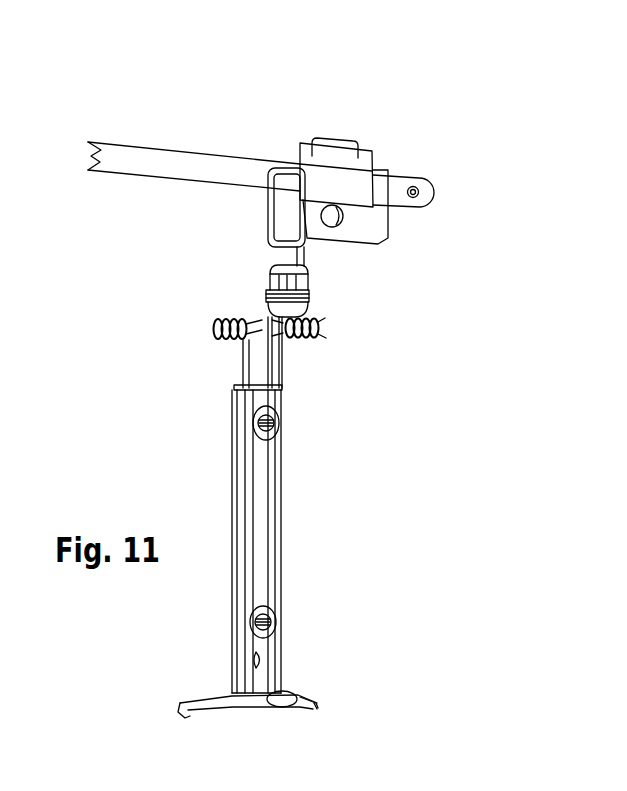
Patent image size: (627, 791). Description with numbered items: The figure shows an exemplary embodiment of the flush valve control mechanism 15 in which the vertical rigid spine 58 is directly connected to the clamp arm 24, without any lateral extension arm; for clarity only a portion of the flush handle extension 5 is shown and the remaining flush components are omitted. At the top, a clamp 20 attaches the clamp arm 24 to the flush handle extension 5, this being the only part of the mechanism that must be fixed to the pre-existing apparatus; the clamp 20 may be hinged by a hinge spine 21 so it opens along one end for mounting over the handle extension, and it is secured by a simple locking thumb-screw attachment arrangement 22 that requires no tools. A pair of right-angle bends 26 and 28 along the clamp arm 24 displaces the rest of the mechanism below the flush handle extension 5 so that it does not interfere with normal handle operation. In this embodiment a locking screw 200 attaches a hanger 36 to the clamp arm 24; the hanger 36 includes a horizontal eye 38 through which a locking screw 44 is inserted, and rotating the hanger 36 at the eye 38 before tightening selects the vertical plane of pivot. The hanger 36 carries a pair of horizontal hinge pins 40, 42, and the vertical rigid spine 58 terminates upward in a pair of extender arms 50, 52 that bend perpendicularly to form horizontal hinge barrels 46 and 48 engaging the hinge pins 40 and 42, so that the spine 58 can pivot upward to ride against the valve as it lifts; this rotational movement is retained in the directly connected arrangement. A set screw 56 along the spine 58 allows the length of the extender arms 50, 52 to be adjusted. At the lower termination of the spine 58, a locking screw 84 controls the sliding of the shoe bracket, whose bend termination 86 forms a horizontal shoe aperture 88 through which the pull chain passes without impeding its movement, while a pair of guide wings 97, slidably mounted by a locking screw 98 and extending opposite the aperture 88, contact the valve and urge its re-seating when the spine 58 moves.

The flush handle extension 5 is at (150, 148).
The flush valve control mechanism 15 is at (541, 316).
The clamp 20 is at (387, 158).
The hinge spine 21 is at (332, 143).
The locking thumb-screw attachment arrangement 22 is at (337, 233).
The clamp arm 24 is at (265, 206).
The right-angle bend 26 is at (267, 242).
The right-angle bend 28 is at (313, 237).
The hanger 36 is at (258, 298).
The horizontal eye 38 is at (308, 297).
The horizontal hinge pin 40 is at (215, 341).
The horizontal hinge pin 42 is at (323, 330).
The locking screw 44 is at (270, 272).
The horizontal hinge barrel 46 is at (242, 345).
The horizontal hinge barrel 48 is at (283, 337).
The extender arm 50 is at (234, 390).
The extender arm 52 is at (282, 373).
The set screw 56 is at (280, 438).
The vertical rigid spine 58 is at (282, 490).
The locking screw 84 is at (276, 616).
The bend termination 86 is at (288, 710).
The horizontal shoe aperture 88 is at (271, 710).
The guide wings 97 is at (190, 697).
The locking screw 98 is at (268, 660).
The locking screw 200 is at (268, 290).